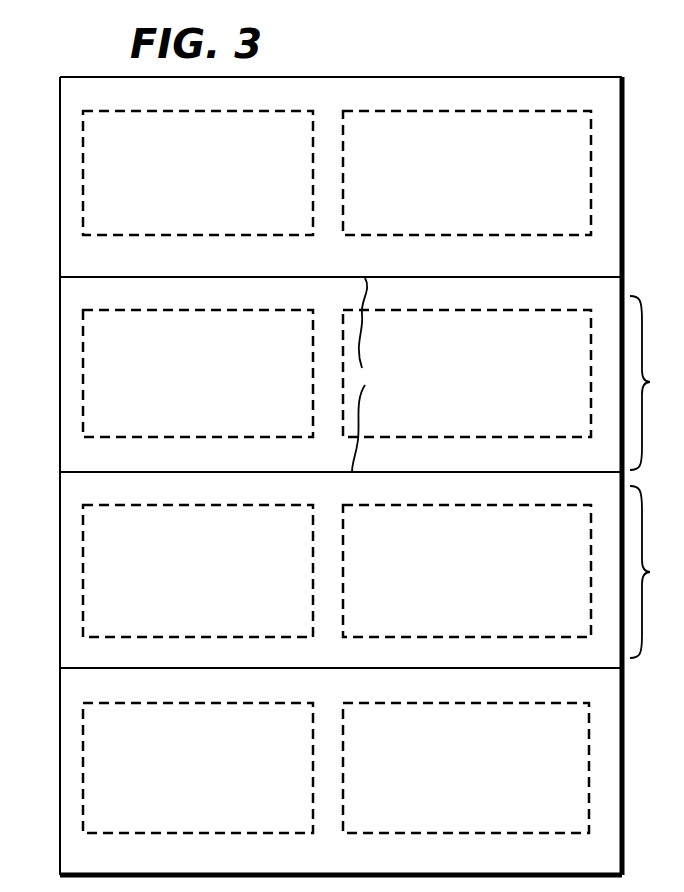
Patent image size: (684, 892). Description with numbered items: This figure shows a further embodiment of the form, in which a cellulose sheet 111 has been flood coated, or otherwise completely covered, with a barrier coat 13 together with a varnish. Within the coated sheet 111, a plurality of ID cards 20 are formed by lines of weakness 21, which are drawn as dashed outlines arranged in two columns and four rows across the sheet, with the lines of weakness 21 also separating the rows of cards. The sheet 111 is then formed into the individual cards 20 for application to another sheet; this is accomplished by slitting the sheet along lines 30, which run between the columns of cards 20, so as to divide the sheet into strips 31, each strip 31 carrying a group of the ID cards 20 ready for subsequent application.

The cellulose sheet 111 is at (60, 95).
The barrier coat 13 is at (325, 97).
The ID cards 20 is at (552, 148).
The lines of weakness 21 is at (477, 110).
The slitting lines 30 is at (462, 686).
The strips 31 is at (653, 477).